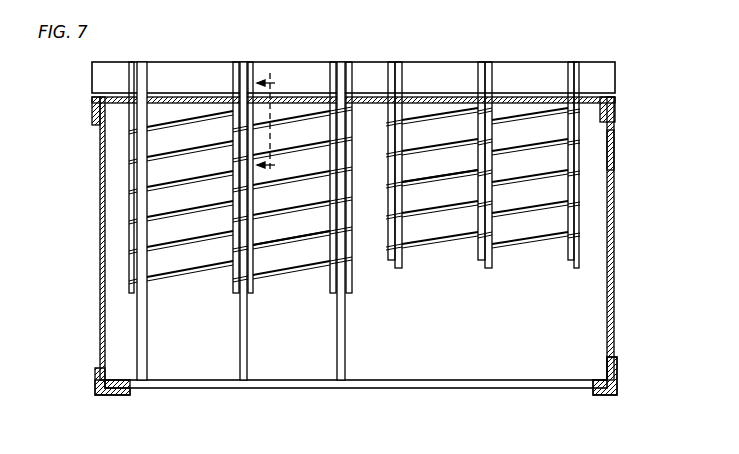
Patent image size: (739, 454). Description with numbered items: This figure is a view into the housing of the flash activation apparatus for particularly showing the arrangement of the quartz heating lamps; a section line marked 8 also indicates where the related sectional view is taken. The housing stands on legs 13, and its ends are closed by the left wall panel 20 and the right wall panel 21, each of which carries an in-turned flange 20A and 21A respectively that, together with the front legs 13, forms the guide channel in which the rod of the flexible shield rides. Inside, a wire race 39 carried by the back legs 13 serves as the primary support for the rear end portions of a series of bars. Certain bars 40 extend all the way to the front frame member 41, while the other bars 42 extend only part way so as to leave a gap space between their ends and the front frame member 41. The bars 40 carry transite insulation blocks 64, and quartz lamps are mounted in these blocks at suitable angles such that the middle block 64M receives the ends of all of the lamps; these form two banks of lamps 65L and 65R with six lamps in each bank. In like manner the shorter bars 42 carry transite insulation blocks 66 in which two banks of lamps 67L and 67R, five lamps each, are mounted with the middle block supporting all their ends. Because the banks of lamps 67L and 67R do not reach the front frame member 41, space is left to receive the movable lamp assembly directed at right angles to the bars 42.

The wire race 39 is at (410, 68).
The wall panel 20 is at (100, 229).
The in-turned flange 20A is at (100, 372).
The wall panel 21 is at (613, 302).
The in-turned flange 21A is at (600, 372).
The legs 13 is at (97, 392).
The front frame member 41 is at (430, 380).
The bars 40 is at (147, 331).
The transite insulation blocks 64 is at (129, 269).
The middle insulation block 64M is at (258, 259).
The left bank of quartz lamps 65L is at (230, 180).
The right bank of quartz lamps 65R is at (326, 176).
The transite insulation blocks 66 is at (470, 180).
The left bank of quartz lamps 67L is at (438, 176).
The right bank of quartz lamps 67R is at (530, 118).
The bars 42 is at (480, 262).
The section line 8- 8 is at (273, 123).